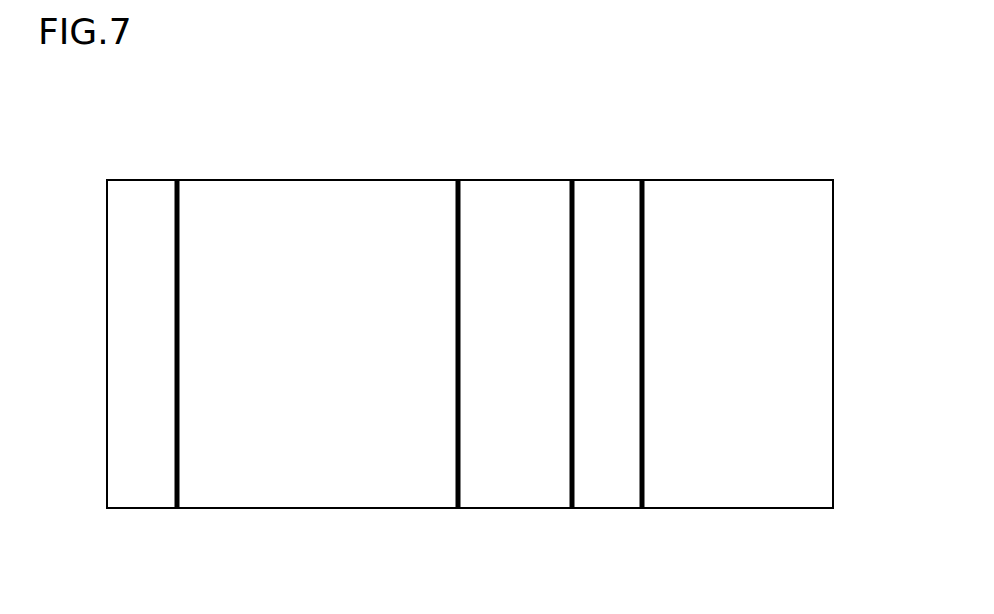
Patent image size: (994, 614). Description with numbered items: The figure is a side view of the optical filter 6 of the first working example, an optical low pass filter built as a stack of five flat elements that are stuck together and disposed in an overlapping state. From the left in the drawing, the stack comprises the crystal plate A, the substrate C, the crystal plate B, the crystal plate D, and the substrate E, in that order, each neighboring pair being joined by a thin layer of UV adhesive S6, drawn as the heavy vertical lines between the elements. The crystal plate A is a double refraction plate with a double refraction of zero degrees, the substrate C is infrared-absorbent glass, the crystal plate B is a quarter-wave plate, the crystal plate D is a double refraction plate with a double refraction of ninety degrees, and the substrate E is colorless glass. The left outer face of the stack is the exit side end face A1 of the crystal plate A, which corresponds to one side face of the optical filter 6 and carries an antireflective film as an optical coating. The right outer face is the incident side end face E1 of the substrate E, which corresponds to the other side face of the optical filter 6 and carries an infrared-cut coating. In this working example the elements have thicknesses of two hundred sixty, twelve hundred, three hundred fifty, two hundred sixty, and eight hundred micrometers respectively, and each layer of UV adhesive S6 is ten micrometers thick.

The optical filter 6 is at (85, 214).
The crystal plate A is at (146, 195).
The crystal plate B is at (512, 195).
The substrate C is at (313, 195).
The crystal plate D is at (605, 195).
The substrate E is at (730, 195).
The exit side end face A1 is at (107, 319).
The incident side end face E1 is at (833, 282).
The UV adhesive S6 is at (177, 510).